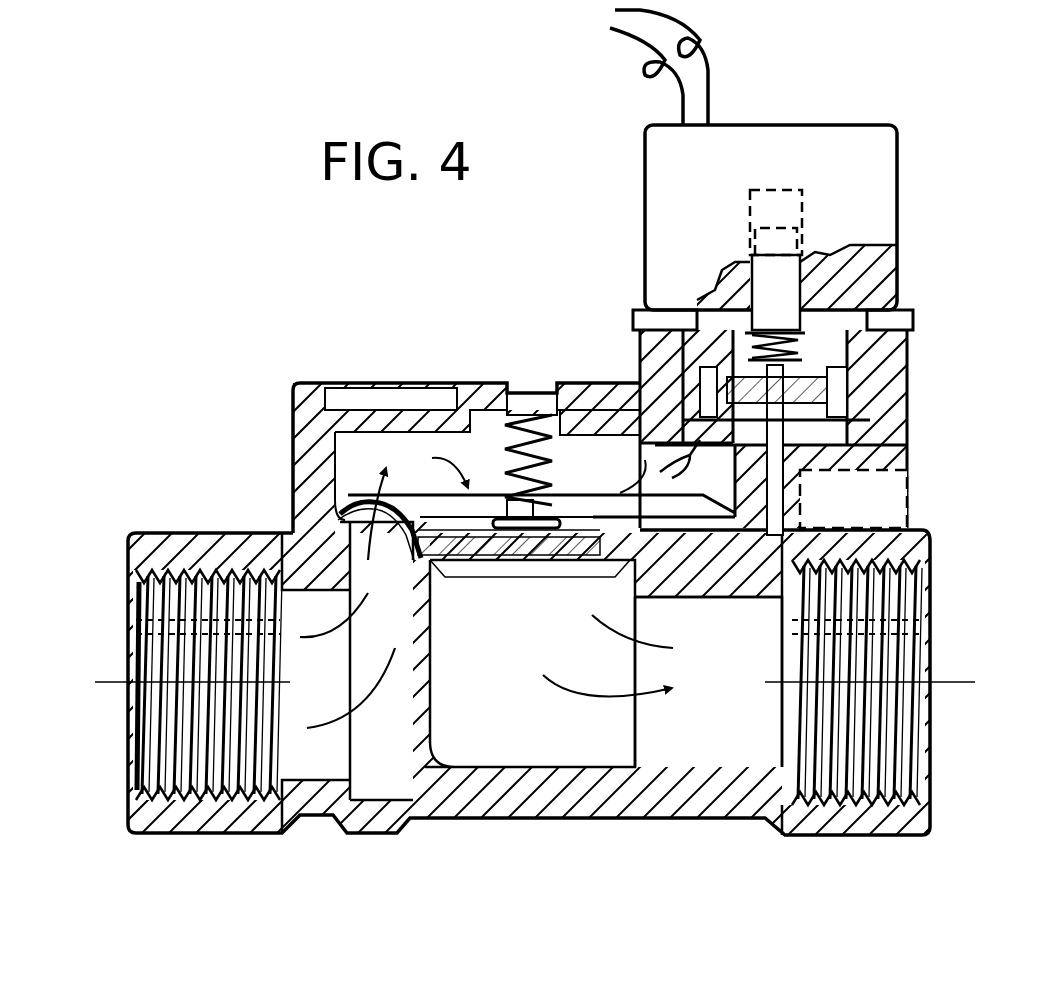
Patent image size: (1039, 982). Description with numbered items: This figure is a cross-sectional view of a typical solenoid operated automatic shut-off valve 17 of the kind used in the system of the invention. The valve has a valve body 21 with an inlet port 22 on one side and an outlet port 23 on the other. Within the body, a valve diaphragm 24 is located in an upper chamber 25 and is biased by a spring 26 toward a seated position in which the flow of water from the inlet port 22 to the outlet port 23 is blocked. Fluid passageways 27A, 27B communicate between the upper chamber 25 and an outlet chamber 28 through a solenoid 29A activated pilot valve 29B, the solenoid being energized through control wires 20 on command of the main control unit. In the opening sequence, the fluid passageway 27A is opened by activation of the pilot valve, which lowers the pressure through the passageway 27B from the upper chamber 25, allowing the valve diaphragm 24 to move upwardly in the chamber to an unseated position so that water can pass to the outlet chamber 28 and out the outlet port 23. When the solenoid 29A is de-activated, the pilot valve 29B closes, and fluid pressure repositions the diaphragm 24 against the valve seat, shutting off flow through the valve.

The automatic shut-off valve 17 is at (285, 362).
The control wires 20 is at (635, 65).
The valve body 21 is at (530, 795).
The inlet port 22 is at (160, 660).
The outlet port 23 is at (930, 620).
The valve diaphragm 24 is at (440, 500).
The upper chamber 25 is at (333, 468).
The spring 26 is at (492, 400).
The fluid passageway 27A is at (640, 382).
The fluid passageway 27B is at (850, 450).
The outlet chamber 28 is at (730, 745).
The solenoid 29A is at (885, 272).
The pilot valve 29B is at (870, 352).